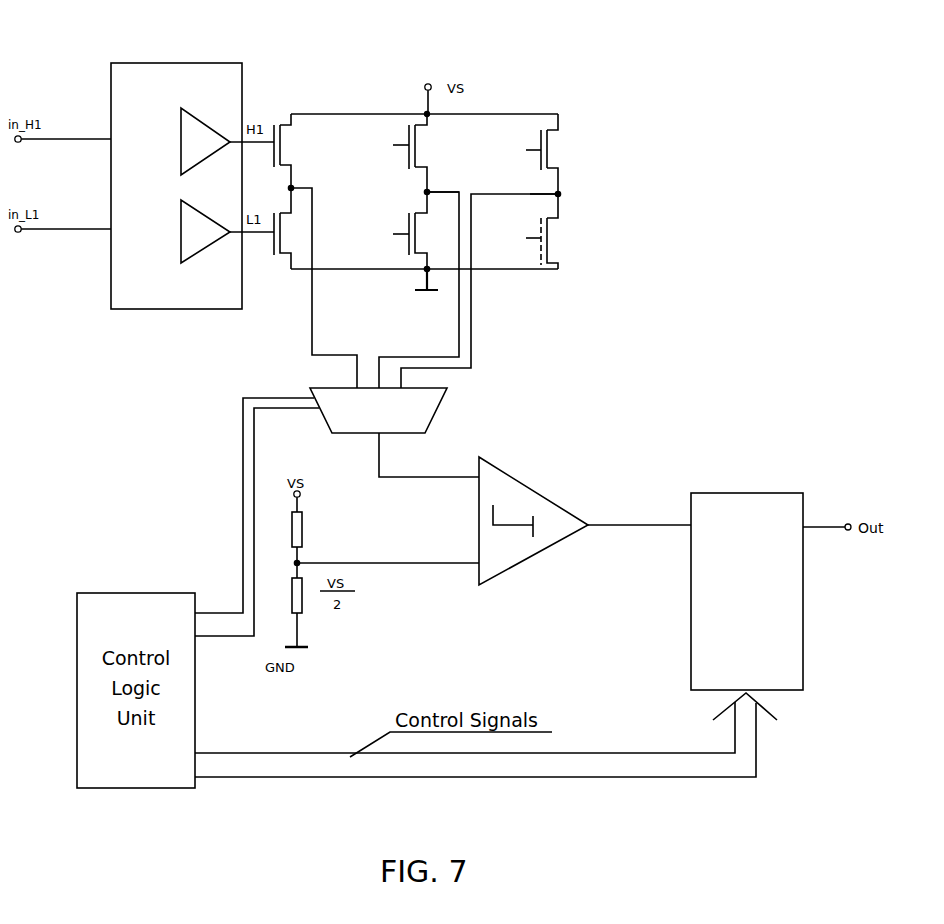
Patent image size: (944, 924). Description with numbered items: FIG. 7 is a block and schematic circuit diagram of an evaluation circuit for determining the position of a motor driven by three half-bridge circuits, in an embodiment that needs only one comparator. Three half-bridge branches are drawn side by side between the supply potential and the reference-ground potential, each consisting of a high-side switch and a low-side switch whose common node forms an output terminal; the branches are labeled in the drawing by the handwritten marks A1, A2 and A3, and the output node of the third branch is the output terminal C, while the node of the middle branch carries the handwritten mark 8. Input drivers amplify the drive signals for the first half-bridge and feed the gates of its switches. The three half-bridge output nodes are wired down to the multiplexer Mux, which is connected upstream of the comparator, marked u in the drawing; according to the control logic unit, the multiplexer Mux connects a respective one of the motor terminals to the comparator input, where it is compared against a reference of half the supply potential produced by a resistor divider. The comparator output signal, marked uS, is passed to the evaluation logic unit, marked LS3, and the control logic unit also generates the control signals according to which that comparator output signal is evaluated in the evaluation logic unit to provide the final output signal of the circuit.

The first half-bridge transistor stage A1 with node k1 A1 is at (320, 251).
The second half-bridge transistor stage A2 with node k2 A2 is at (427, 251).
The third half-bridge transistor stage A3 with node k3 A3 is at (518, 251).
The node B of second bridge branch 8 is at (443, 180).
The output terminal C is at (553, 185).
The multiplexer Mux is at (448, 415).
The comparator u is at (543, 531).
The comparator output signal uS is at (639, 508).
The evaluation logic unit LS3 is at (783, 497).